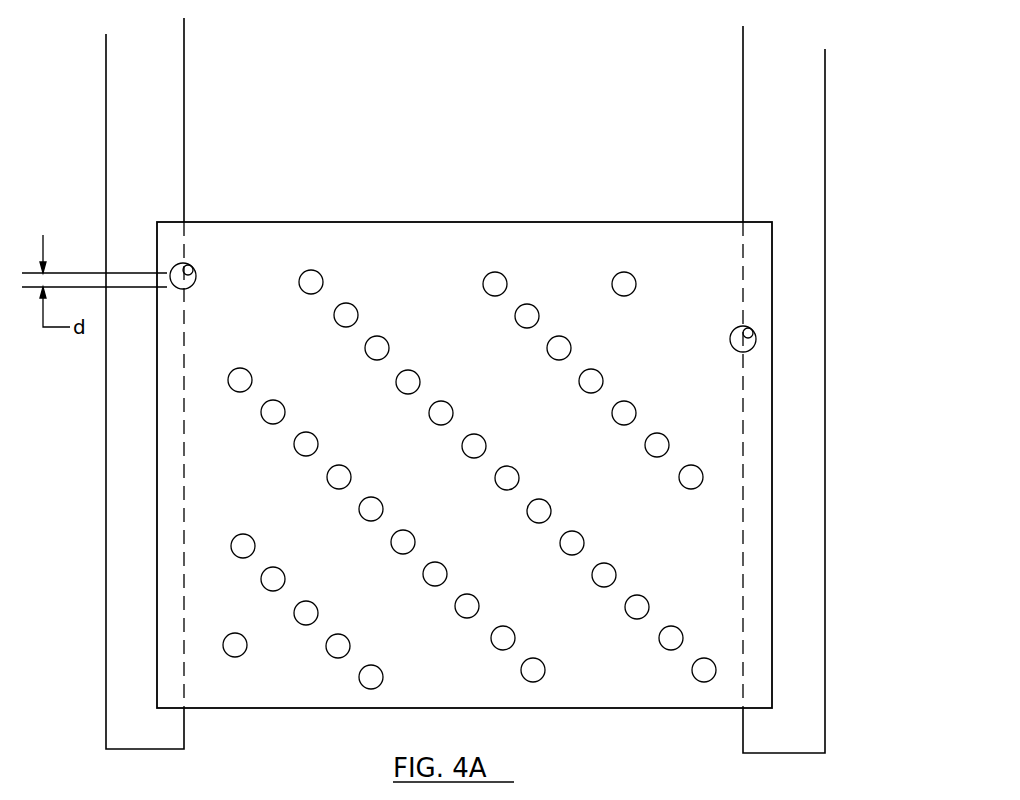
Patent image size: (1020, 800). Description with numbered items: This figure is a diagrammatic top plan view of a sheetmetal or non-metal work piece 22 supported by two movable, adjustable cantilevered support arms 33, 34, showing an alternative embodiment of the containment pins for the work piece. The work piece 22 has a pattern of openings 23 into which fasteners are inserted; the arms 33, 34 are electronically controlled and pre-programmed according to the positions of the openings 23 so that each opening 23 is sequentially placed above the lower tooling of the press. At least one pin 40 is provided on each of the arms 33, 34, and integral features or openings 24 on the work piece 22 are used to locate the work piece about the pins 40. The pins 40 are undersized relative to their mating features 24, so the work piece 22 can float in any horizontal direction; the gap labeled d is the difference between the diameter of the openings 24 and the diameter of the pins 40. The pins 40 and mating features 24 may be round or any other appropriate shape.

The work piece 22 is at (388, 245).
The openings 23 is at (348, 313).
The mating features 24 is at (199, 280).
The cantilevered support arm 33 is at (127, 602).
The cantilevered support arm 34 is at (802, 470).
The pins 40 is at (192, 258).